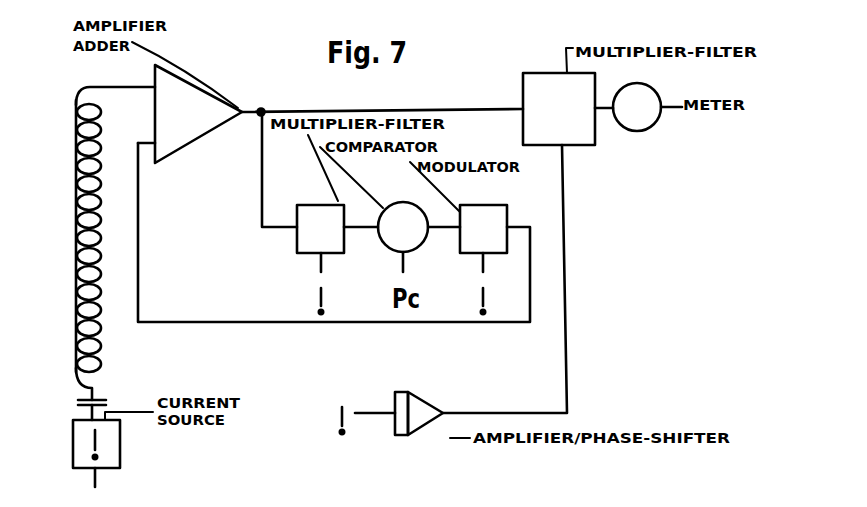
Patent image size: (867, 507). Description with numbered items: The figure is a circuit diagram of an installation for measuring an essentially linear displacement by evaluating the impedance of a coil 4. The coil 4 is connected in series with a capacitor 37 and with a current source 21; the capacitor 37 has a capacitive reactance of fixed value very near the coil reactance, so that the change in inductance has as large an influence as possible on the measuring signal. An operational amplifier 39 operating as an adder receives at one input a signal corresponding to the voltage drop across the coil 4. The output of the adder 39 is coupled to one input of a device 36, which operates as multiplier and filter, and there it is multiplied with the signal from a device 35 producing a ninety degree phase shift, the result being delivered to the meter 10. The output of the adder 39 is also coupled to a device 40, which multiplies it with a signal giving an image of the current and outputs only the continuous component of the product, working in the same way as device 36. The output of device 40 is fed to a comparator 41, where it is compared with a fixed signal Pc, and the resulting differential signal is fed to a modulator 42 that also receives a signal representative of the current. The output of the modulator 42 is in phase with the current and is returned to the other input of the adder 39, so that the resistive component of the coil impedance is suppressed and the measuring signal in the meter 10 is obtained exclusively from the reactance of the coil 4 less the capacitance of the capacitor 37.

The operational amplifier 39 is at (190, 128).
The coil 4 is at (95, 257).
The capacitor 37 is at (99, 402).
The current source 21 is at (113, 448).
The device 40 is at (325, 208).
The comparator 41 is at (400, 208).
The modulator 42 is at (483, 208).
The device 36 is at (555, 77).
The meter 10 is at (642, 118).
The device 35 is at (418, 418).